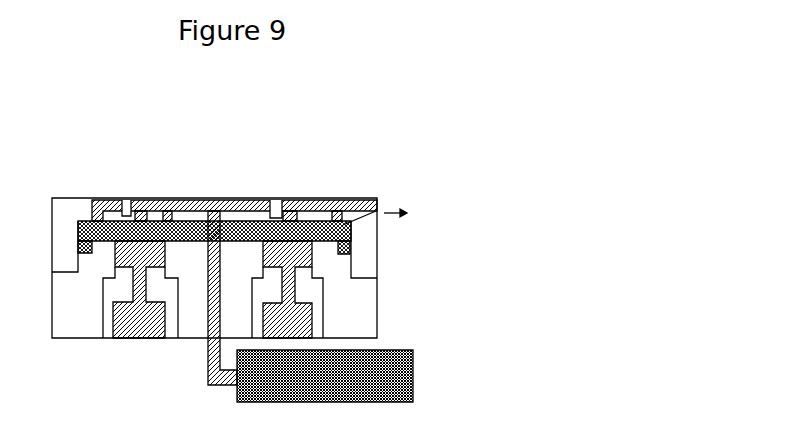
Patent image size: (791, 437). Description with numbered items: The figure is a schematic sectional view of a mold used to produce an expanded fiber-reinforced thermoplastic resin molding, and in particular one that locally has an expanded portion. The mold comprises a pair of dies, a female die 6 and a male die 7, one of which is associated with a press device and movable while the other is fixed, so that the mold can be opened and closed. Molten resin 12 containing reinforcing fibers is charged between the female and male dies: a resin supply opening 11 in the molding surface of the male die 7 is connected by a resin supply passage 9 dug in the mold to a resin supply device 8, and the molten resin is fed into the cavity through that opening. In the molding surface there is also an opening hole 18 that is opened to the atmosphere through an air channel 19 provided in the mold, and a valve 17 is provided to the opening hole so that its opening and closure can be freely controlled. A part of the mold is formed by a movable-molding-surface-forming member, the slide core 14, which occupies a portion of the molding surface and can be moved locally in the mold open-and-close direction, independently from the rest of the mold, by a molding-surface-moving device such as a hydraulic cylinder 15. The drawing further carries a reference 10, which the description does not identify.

The female die 6 is at (363, 267).
The male die 7 is at (362, 328).
The resin supply device 8 is at (410, 385).
The resin supply passage 9 is at (205, 350).
The carrier plate 10 is at (208, 203).
The resin supply opening 11 is at (353, 200).
The molten resin 12 is at (351, 247).
The slide core 14 is at (386, 211).
The hydraulic cylinder 15 is at (290, 315).
The valve 17 is at (138, 200).
The opening hole 18 is at (152, 200).
The air channel 19 is at (123, 200).